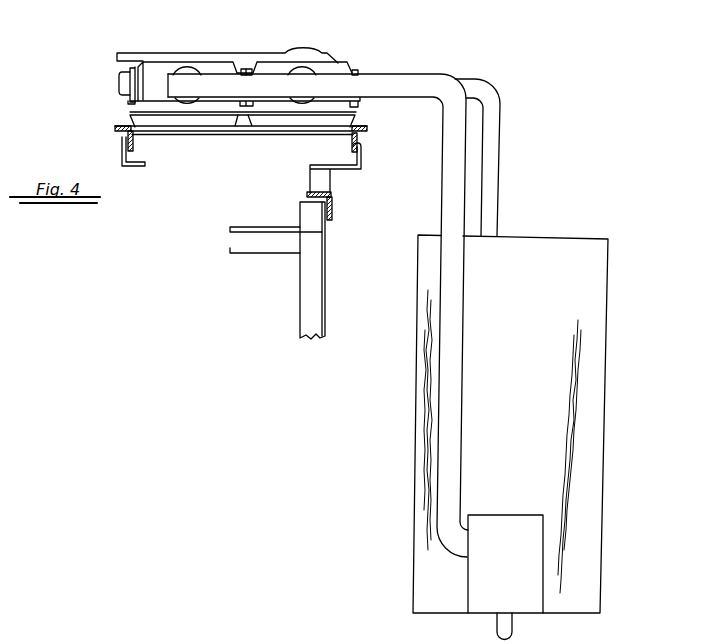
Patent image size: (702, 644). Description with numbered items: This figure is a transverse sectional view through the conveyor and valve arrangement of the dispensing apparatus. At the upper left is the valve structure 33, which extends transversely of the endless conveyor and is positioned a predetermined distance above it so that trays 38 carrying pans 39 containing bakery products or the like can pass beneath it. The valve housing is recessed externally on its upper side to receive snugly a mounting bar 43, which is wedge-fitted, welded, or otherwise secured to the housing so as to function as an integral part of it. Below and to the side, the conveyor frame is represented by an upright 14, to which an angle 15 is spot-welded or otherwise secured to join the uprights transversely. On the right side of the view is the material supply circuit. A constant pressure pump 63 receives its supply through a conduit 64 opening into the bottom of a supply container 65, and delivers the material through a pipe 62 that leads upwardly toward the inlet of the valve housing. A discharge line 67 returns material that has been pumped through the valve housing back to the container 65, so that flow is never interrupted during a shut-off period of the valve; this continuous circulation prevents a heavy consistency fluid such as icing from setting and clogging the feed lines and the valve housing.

The upright 14 is at (308, 288).
The angle 15 is at (333, 200).
The valve structure 33 is at (344, 58).
The tray 38 is at (193, 132).
The pan 39 is at (262, 122).
The mounting bar 43 is at (123, 52).
The pipe 62 is at (455, 397).
The constant pressure pump 63 is at (511, 582).
The conduit 64 is at (512, 630).
The supply container 65 is at (555, 308).
The discharge line 67 is at (494, 148).